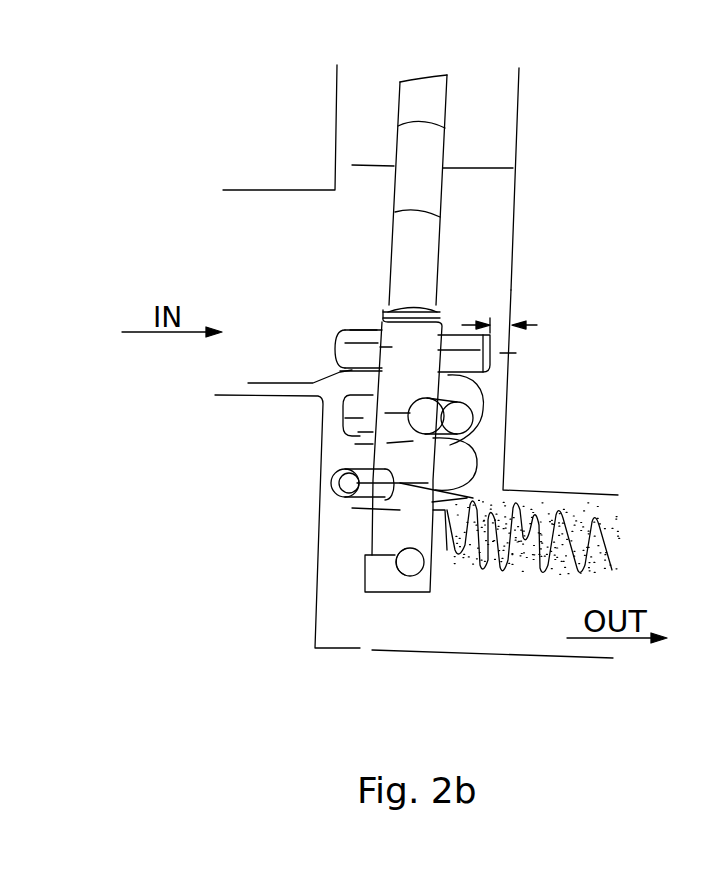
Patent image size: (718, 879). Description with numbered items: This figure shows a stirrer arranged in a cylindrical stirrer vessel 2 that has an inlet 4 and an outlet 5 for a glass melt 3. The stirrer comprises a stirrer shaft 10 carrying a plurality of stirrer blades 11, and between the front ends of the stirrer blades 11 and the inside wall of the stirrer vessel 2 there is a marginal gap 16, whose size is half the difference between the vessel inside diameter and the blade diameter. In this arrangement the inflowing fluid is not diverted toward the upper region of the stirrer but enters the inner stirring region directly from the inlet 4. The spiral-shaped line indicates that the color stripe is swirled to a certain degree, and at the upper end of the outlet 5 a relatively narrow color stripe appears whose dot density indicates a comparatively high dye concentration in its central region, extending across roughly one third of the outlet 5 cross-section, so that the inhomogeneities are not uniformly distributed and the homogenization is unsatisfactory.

The stirrer vessel 2 is at (497, 143).
The glass melt 3 is at (492, 213).
The inlet 4 is at (237, 238).
The outlet 5 is at (600, 587).
The stirrer shaft 10 is at (433, 107).
The stirrer blades 11 is at (337, 332).
The gap 16 is at (500, 353).